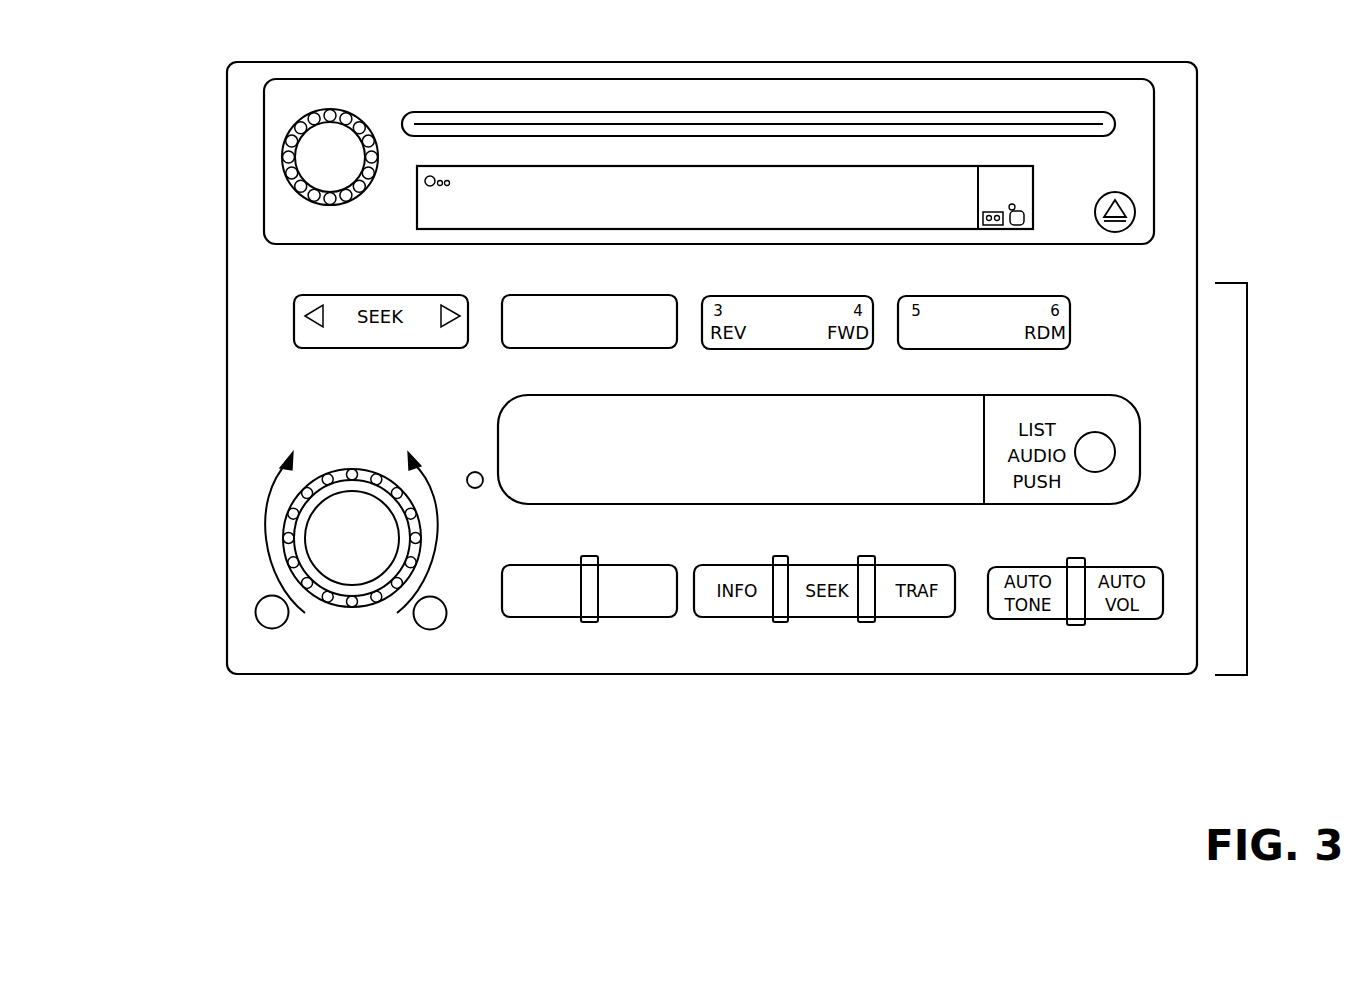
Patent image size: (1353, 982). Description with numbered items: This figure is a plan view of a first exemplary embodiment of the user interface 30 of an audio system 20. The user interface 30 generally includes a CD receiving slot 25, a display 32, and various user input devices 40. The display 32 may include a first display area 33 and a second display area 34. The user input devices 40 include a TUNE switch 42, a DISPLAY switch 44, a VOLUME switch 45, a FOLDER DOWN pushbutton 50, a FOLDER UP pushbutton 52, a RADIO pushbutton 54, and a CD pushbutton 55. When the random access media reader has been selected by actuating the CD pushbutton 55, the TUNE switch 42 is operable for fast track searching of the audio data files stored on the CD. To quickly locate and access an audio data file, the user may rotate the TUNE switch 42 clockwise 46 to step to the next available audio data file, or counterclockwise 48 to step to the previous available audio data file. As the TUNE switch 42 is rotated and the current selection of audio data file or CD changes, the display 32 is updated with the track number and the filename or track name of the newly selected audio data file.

The audio system 20 is at (227, 122).
The CD receiving slot 25 is at (1112, 129).
The user interface 30 is at (163, 333).
The display 32 is at (1157, 192).
The first display area 33 is at (477, 177).
The second display area 34 is at (793, 173).
The user input devices 40 is at (1247, 482).
The TUNE switch 42 is at (283, 528).
The DISPLAY switch 44 is at (323, 557).
The VOLUME switch 45 is at (283, 200).
The clockwise rotation 46 is at (290, 577).
The counterclockwise rotation 48 is at (437, 566).
The FOLDER DOWN pushbutton 50 is at (524, 340).
The FOLDER UP pushbutton 52 is at (661, 341).
The RADIO pushbutton 54 is at (553, 608).
The CD pushbutton 55 is at (615, 607).